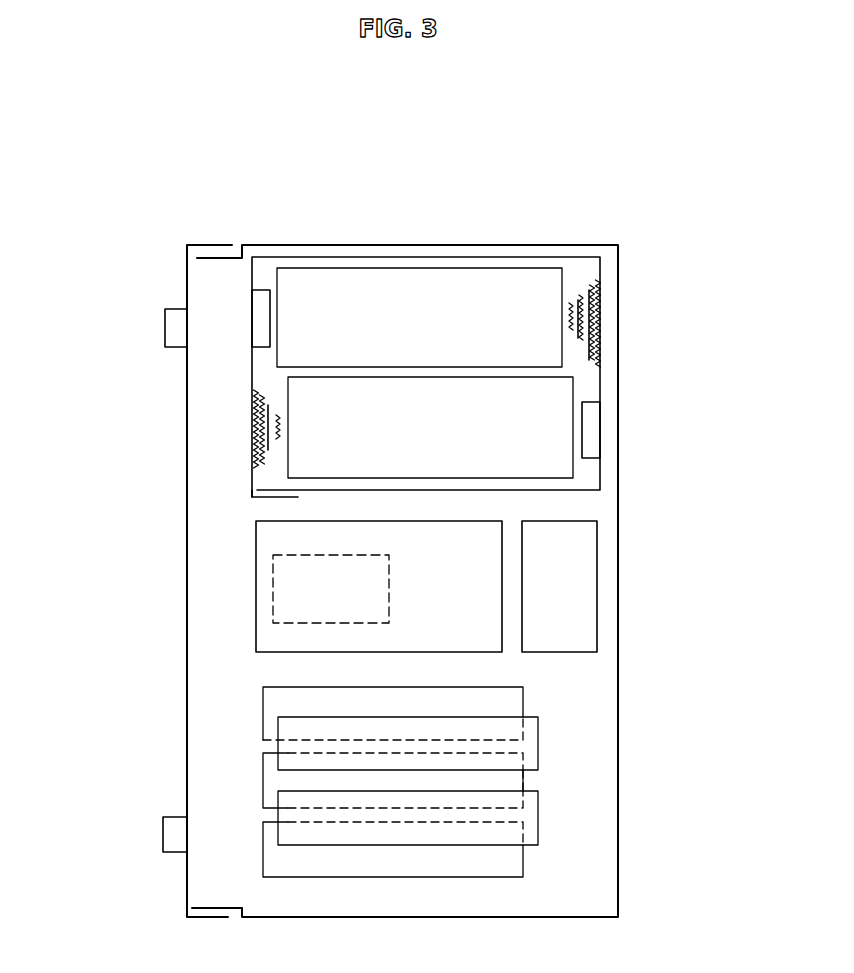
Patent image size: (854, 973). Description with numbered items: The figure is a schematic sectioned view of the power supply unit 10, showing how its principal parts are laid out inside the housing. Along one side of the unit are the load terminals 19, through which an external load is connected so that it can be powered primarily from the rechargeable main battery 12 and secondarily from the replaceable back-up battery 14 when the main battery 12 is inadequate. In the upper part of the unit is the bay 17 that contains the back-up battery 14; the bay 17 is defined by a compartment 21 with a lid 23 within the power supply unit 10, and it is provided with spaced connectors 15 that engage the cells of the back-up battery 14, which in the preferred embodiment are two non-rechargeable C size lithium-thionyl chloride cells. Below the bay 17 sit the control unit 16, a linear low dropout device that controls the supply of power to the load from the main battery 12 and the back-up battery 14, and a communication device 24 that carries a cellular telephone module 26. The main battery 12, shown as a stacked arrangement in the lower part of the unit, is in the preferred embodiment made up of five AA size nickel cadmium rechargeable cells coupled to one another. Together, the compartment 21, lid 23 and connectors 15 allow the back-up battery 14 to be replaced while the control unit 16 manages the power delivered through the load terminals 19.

The power supply unit 10 is at (601, 183).
The main battery 12 is at (566, 698).
The back-up battery 14 is at (599, 378).
The connectors 15 is at (252, 318).
The control unit 16 is at (580, 580).
The bay 17 is at (254, 376).
The load terminals 19 is at (165, 327).
The compartment 21 is at (586, 256).
The lid 23 is at (253, 500).
The communication device 24 is at (256, 635).
The cellular telephone module 26 is at (273, 588).